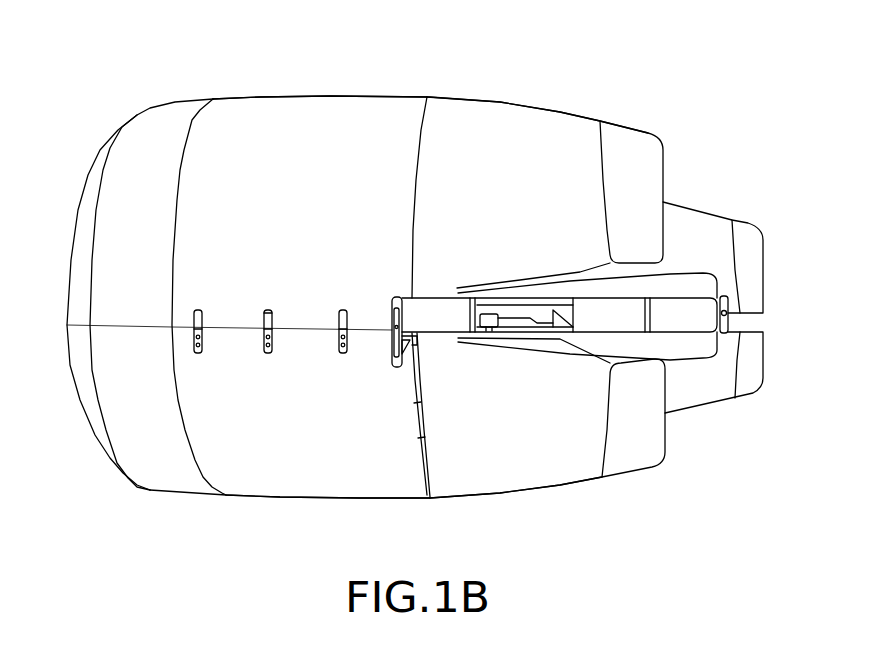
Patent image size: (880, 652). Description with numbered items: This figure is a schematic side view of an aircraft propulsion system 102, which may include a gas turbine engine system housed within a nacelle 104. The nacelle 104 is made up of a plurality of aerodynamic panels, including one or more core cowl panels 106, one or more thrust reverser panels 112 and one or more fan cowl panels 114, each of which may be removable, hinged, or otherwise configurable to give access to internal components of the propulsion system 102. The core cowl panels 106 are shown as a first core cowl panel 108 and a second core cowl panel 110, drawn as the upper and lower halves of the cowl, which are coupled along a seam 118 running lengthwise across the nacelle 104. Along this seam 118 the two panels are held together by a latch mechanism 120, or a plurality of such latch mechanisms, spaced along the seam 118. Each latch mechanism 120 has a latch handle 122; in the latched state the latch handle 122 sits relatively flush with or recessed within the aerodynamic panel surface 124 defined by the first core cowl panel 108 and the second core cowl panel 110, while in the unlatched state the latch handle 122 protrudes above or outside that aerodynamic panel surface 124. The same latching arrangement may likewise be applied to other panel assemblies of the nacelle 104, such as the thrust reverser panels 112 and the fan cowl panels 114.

The aircraft propulsion system 102 is at (98, 104).
The nacelle 104 is at (242, 98).
The core cowl panels 106 is at (235, 482).
The first core cowl panel 108 is at (308, 487).
The second core cowl panel 110 is at (330, 100).
The thrust reverser panels 112 is at (525, 482).
The fan cowl panels 114 is at (158, 478).
The seam 118 is at (305, 331).
The latch mechanism 120 is at (268, 296).
The latch handle 122 is at (272, 310).
The aerodynamic panel surface 124 is at (244, 190).